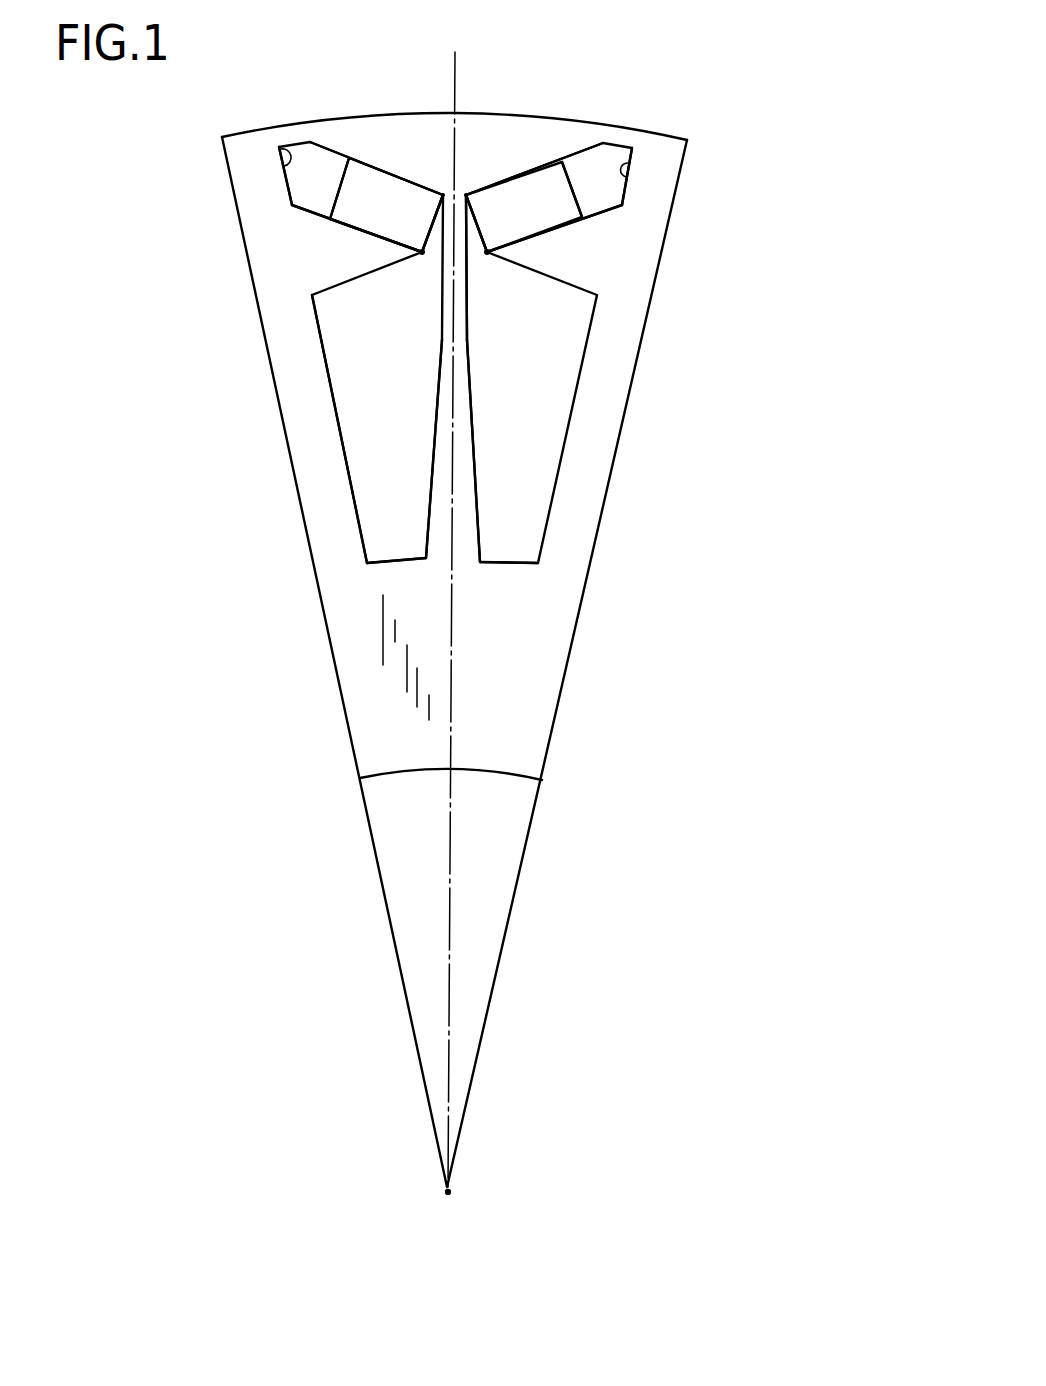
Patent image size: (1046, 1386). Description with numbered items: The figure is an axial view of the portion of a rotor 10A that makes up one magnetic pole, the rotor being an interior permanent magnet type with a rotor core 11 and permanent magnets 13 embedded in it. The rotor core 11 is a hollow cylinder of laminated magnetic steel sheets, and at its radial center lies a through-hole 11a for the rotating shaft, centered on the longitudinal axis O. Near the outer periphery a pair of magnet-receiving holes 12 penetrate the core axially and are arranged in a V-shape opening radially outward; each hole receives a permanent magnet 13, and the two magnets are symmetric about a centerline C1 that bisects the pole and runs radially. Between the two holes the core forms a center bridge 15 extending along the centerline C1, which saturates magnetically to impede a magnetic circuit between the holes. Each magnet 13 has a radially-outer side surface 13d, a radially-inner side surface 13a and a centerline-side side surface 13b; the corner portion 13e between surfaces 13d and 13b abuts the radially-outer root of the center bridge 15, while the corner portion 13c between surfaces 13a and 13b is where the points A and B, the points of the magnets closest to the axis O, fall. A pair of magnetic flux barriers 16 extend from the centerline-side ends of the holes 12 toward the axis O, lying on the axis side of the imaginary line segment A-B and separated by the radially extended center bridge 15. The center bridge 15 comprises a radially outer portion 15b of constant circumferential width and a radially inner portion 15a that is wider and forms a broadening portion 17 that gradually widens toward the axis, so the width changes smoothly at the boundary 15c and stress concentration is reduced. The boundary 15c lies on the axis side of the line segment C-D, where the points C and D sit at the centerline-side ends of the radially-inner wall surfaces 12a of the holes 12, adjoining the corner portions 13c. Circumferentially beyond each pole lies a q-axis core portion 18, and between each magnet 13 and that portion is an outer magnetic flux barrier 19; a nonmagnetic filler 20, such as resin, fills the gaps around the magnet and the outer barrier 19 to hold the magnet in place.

The rotor 10A is at (673, 131).
The rotor core 11 is at (351, 629).
The through-hole 11a is at (405, 775).
The magnet-receiving hole 12 is at (452, 214).
The radially-inner wall surface 12a is at (353, 216).
The permanent magnet 13 is at (355, 192).
The radially-inner side surface 13a is at (422, 252).
The centerline C1-side side surface 13b is at (446, 220).
The corner portion 13c is at (422, 254).
The radially-outer side surface 13d is at (397, 170).
The corner portion 13e is at (443, 192).
The center bridge 15 is at (717, 335).
The radially inner portion 15a is at (460, 460).
The radially outer portion 15b is at (457, 330).
The boundary 15c is at (466, 383).
The magnetic flux barrier 16 is at (413, 512).
The broadening portion 17 is at (443, 460).
The q-axis core portion 18 is at (260, 187).
The outer magnetic flux barrier 19 is at (279, 157).
The filler 20 is at (308, 158).
The point A is at (422, 251).
The point B is at (487, 251).
The point C is at (422, 254).
The point D is at (487, 254).
The centerline C1 is at (458, 607).
The longitudinal axis O is at (447, 1211).